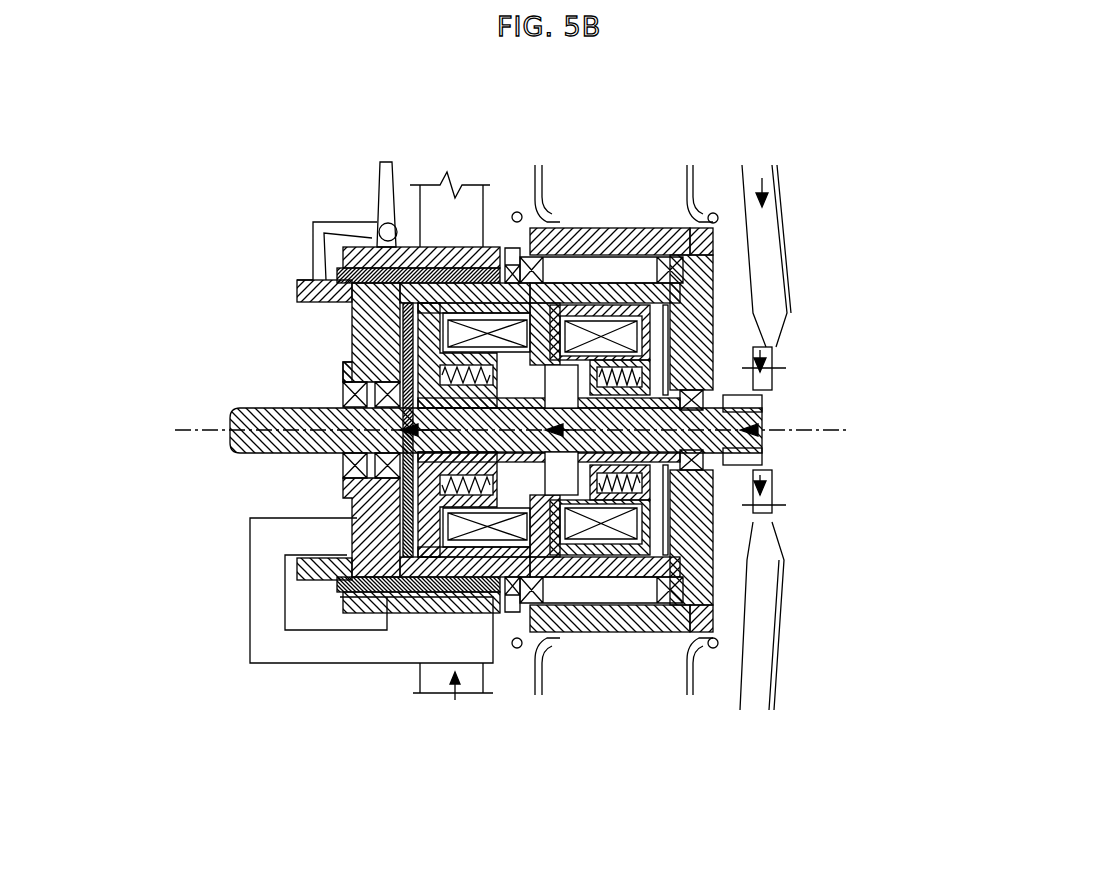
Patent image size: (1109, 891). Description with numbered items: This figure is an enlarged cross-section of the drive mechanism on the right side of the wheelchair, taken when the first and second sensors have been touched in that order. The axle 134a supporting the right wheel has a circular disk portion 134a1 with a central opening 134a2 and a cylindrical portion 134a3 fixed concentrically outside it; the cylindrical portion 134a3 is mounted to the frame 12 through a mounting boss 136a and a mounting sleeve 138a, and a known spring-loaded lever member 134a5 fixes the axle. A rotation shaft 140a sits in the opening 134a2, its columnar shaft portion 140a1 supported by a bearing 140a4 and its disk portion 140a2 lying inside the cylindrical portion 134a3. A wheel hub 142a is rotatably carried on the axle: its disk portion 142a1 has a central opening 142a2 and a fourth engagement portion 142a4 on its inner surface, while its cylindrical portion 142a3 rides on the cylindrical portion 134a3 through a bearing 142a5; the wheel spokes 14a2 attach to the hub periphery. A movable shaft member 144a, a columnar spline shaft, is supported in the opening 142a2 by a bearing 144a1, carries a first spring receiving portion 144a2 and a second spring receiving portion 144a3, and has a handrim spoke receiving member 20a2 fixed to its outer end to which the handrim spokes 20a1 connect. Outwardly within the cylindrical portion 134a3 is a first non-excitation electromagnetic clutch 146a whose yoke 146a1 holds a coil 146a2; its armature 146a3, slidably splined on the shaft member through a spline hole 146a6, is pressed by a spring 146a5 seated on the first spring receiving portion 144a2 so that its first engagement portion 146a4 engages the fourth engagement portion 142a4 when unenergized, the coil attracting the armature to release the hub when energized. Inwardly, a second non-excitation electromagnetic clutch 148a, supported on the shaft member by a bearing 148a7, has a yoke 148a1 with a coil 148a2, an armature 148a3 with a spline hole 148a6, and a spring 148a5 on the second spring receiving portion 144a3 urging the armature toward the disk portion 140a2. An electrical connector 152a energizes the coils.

The frame 12 is at (435, 197).
The wheel spokes 14a2 is at (547, 183).
The handrim spokes 20a1 is at (783, 220).
The handrim spoke receiving member 20a2 is at (768, 405).
The axle 134a is at (365, 575).
The disk portion 134a1 is at (353, 528).
The opening 134a2 is at (333, 465).
The cylindrical portion 134a3 is at (555, 660).
The axle fixing spring-loaded lever member 134a5 is at (322, 235).
The mounting boss 136a is at (408, 225).
The mounting sleeve 138a is at (360, 245).
The rotation shaft 140a is at (322, 300).
The shaft portion 140a1 is at (240, 405).
The disk portion 140a2 is at (408, 580).
The bearing 140a4 is at (355, 385).
The wheel hub 142a is at (698, 665).
The disk portion 142a1 is at (705, 505).
The opening 142a2 is at (712, 463).
The cylindrical portion 142a3 is at (628, 330).
The fourth engagement portion 142a4 is at (777, 677).
The bearing 142a5 is at (705, 260).
The movable shaft member 144a is at (768, 425).
The bearing 144a1 is at (778, 432).
The first spring receiving portion 144a2 is at (577, 330).
The second spring receiving portion 144a3 is at (503, 232).
The first non-excitation electromagnetic clutch 146a is at (665, 590).
The yoke 146a1 is at (700, 650).
The coil 146a2 is at (705, 540).
The armature 146a3 is at (718, 532).
The first engagement portion 146a4 is at (705, 650).
The spring 146a5 is at (645, 330).
The spline hole 146a6 is at (685, 600).
The second non-excitation electromagnetic clutch 148a is at (528, 673).
The yoke 148a1 is at (540, 640).
The coil 148a2 is at (440, 610).
The armature 148a3 is at (432, 600).
The spring 148a5 is at (475, 700).
The spline hole 148a6 is at (462, 250).
The bearing 148a7 is at (553, 620).
The electrical connector 152a is at (260, 612).